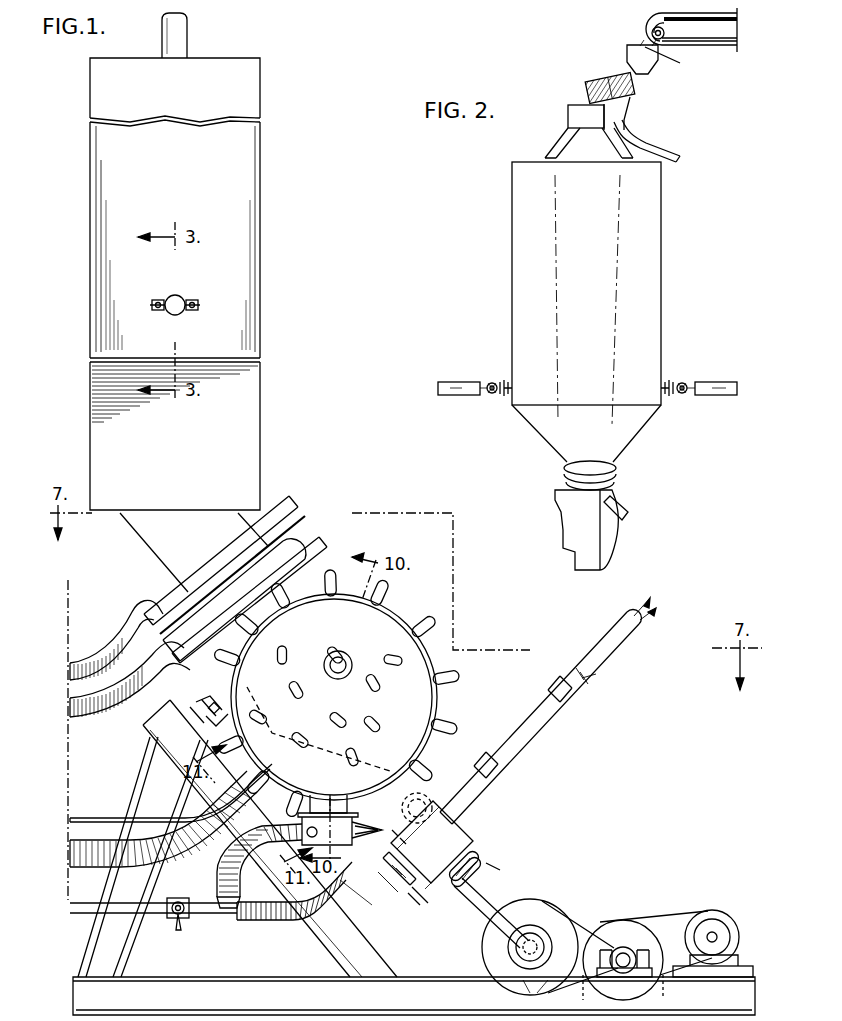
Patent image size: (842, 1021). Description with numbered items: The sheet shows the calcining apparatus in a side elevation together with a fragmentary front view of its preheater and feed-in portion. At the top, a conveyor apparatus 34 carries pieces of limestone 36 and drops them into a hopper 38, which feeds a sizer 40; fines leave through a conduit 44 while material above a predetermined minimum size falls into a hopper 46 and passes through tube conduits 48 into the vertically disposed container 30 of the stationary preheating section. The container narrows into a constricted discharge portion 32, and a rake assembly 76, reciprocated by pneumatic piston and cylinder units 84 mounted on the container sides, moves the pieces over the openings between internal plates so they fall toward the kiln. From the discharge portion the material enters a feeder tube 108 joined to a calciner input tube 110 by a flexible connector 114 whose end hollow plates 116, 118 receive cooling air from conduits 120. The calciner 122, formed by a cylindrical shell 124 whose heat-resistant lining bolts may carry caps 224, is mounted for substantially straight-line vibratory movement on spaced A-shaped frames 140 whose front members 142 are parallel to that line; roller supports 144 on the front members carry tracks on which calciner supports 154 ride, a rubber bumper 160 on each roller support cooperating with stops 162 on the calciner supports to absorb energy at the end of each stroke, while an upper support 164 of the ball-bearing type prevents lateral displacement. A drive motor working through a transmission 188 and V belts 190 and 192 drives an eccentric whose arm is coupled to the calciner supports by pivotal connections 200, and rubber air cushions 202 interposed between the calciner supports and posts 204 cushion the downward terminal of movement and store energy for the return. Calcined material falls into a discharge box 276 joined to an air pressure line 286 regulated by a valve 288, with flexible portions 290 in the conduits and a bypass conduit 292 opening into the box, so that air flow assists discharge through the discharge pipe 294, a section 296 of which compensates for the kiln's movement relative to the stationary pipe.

In FIG. 1, the container 30 is at (262, 238).
In FIG. 2, the container 30 is at (662, 228).
In FIG. 1, the discharge portion 32 is at (262, 448).
In FIG. 2, the discharge portion 32 is at (534, 432).
In FIG. 2, the conveyor apparatus 34 is at (722, 47).
In FIG. 2, the pieces of limestone 36 is at (692, 13).
In FIG. 2, the hopper 38 is at (626, 53).
In FIG. 2, the sizer 40 is at (622, 110).
In FIG. 2, the conduit 44 is at (680, 160).
In FIG. 2, the hopper 46 is at (566, 114).
In FIG. 1, the tube conduits 48 is at (176, 48).
In FIG. 2, the tube conduits 48 is at (582, 147).
In FIG. 1, the rake assembly 76 is at (184, 298).
In FIG. 2, the rake assembly 76 is at (492, 382).
In FIG. 2, the pneumatic piston and cylinder units 84 is at (470, 372).
In FIG. 1, the feeder tube 108 is at (148, 560).
In FIG. 1, the calciner input tube 110 is at (339, 689).
In FIG. 1, the flexible connector 114 is at (302, 537).
In FIG. 1, the hollow plate 116 is at (300, 508).
In FIG. 1, the hollow plate 118 is at (330, 543).
In FIG. 1, the conduits 120 is at (72, 680).
In FIG. 1, the calciner 122 is at (425, 747).
In FIG. 2, the calciner 122 is at (588, 572).
In FIG. 1, the cylindrical shell 124 is at (395, 605).
In FIG. 2, the cylindrical shell 124 is at (564, 534).
In FIG. 1, the A-shaped frames 140 is at (378, 946).
In FIG. 1, the front members 142 is at (365, 928).
In FIG. 1, the roller supports 144 is at (359, 892).
In FIG. 1, the calciner supports 154 is at (460, 840).
In FIG. 1, the rubber bumper 160 is at (400, 890).
In FIG. 1, the stops 162 is at (424, 896).
In FIG. 1, the upper support 164 is at (196, 700).
In FIG. 1, the transmission 188 is at (734, 916).
In FIG. 1, the V belt 190 is at (648, 912).
In FIG. 1, the V belt 192 is at (596, 906).
In FIG. 1, the pivotal connections 200 is at (432, 803).
In FIG. 1, the rubber air cushions 202 is at (484, 858).
In FIG. 1, the posts 204 is at (500, 872).
In FIG. 1, the caps 224 is at (238, 656).
In FIG. 1, the discharge box 276 is at (358, 812).
In FIG. 1, the air pressure line 286 is at (404, 846).
In FIG. 1, the valve 288 is at (170, 922).
In FIG. 1, the flexible portions 290 is at (262, 922).
In FIG. 1, the bypass conduit 292 is at (215, 878).
In FIG. 1, the discharge pipe 294 is at (580, 658).
In FIG. 1, the section 296 is at (520, 740).